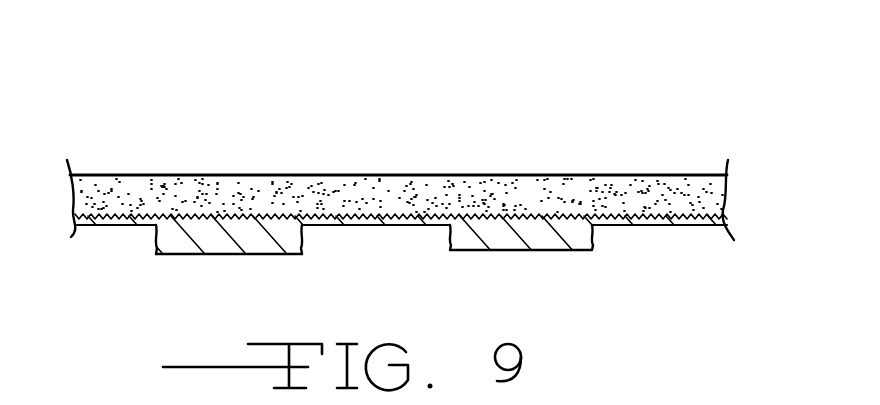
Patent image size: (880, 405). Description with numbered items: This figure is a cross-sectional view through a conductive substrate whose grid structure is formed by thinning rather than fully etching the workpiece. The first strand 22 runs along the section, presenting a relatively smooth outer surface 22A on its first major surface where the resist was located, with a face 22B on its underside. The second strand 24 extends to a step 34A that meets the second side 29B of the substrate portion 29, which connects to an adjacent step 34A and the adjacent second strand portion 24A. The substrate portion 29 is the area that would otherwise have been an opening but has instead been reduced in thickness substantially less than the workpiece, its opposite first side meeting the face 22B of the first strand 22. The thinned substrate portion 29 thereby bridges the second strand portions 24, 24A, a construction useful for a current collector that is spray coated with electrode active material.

The first strand structure 22 is at (400, 132).
The outer surface 22A is at (252, 173).
The face of the first strand portion 22B is at (404, 193).
The second strand structure 24 is at (179, 284).
The second strand portion 24A is at (201, 255).
The substrate portion 29 is at (453, 265).
The second side of the substrate portion 29B is at (695, 220).
The step 34A is at (447, 227).